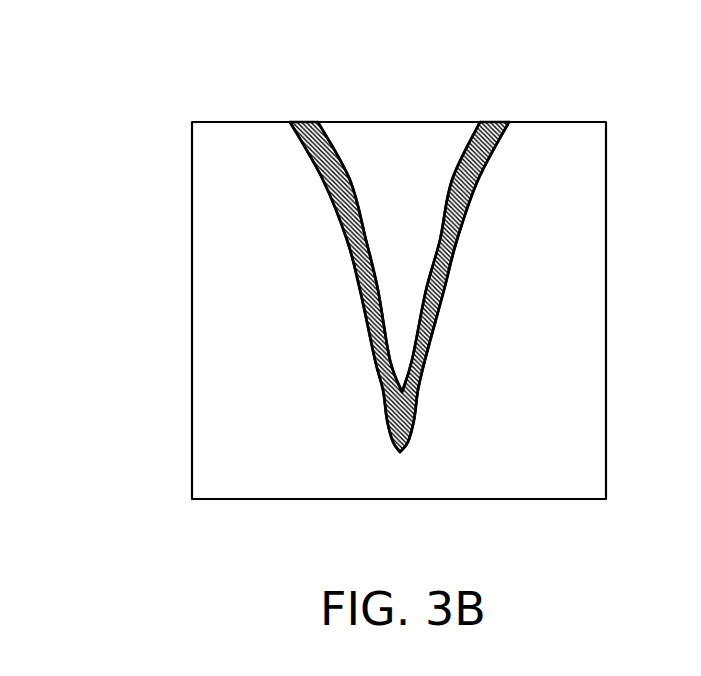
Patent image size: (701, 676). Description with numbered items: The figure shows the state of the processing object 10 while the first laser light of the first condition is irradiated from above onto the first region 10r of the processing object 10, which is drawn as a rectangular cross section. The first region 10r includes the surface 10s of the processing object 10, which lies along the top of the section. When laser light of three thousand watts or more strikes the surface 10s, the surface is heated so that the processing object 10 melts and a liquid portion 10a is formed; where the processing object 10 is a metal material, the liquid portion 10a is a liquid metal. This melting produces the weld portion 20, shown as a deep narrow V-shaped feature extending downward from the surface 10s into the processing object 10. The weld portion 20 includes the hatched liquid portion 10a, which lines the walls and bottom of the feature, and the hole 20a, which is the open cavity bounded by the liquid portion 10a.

The processing object 10 is at (582, 295).
The liquid portion 10a is at (355, 253).
The first region 10r is at (362, 108).
The surface 10s is at (493, 122).
The weld portion 20 is at (350, 392).
The hole 20a is at (413, 143).